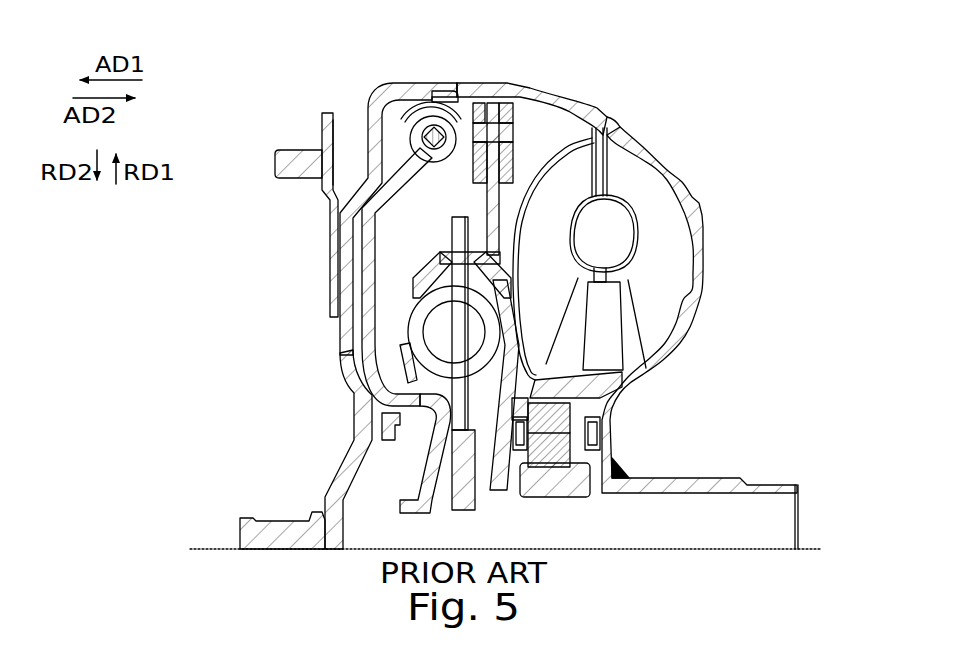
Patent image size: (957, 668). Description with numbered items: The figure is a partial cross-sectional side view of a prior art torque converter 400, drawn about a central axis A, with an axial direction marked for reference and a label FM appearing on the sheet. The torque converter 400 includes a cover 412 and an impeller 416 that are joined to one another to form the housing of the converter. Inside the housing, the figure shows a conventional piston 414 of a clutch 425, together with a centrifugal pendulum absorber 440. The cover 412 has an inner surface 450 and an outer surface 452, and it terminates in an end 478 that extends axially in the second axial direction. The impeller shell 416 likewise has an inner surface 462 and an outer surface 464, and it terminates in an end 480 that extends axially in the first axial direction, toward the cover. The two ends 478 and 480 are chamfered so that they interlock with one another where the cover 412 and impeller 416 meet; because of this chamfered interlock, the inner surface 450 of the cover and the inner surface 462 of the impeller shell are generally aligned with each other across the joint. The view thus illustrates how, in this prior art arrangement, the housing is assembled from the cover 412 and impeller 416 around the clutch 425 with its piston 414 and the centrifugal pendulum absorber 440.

The torque converter 400 is at (702, 178).
The cover 412 is at (330, 275).
The piston 414 is at (340, 372).
The impeller 416 is at (693, 194).
The clutch 425 is at (384, 269).
The centrifugal pendulum absorber 440 is at (590, 108).
The inner surface 450 is at (366, 110).
The outer surface 452 is at (398, 83).
The inner surface 462 is at (620, 122).
The outer surface 464 is at (522, 132).
The end 478 is at (460, 83).
The end 480 is at (428, 90).
The flexible member FM is at (337, 220).
The axis A is at (812, 549).